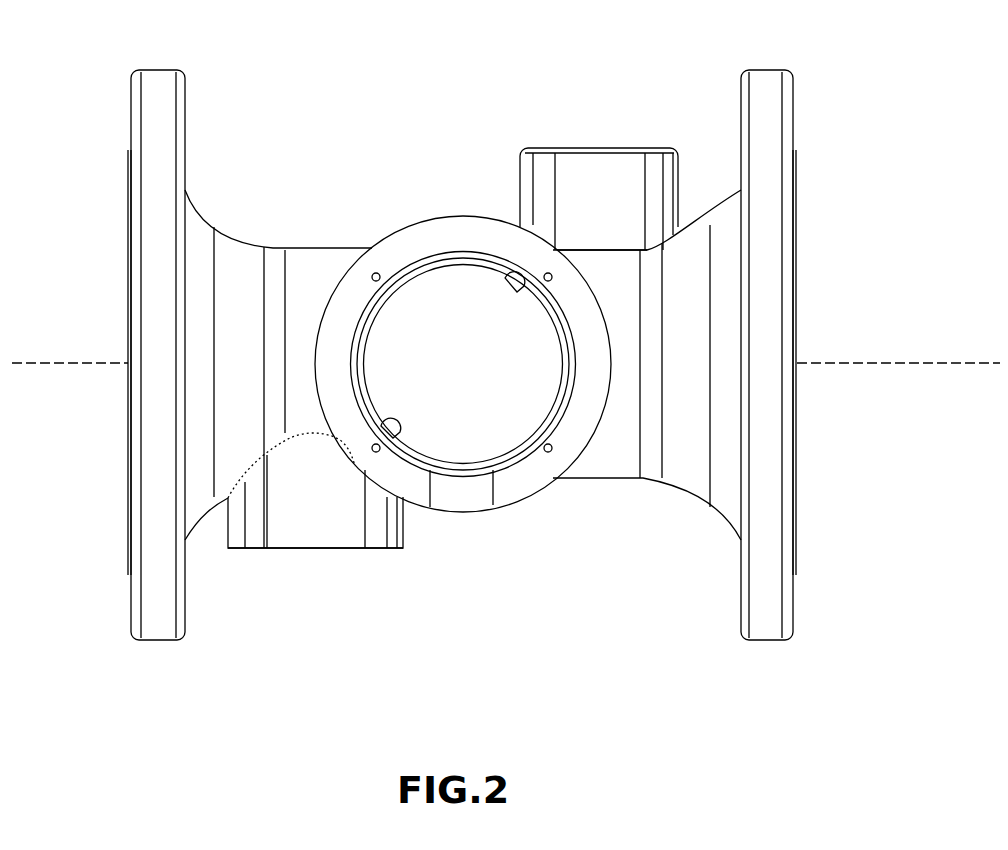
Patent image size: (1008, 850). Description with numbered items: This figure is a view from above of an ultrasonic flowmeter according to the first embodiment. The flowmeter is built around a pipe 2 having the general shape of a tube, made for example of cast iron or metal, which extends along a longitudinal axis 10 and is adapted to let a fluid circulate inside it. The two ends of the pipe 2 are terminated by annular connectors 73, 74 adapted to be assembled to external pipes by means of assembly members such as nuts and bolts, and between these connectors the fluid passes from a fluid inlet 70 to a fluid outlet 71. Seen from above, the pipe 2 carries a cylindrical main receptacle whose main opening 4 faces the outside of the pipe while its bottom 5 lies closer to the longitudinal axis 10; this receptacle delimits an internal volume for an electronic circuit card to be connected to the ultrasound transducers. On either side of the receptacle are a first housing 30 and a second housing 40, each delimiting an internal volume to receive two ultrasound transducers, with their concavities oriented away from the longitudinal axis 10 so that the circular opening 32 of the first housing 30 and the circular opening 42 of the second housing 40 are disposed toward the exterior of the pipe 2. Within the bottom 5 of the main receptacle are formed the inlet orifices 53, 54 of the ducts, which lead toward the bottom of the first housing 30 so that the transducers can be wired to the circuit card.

The pipe 2 is at (626, 482).
The main opening 4 is at (436, 300).
The bottom 5 is at (413, 336).
The longitudinal axis 10 is at (855, 362).
The first housing 30 is at (357, 517).
The opening 32 is at (300, 560).
The second housing 40 is at (658, 165).
The circular opening 42 is at (600, 130).
The inlet orifice 53 is at (512, 280).
The inlet orifice 54 is at (400, 428).
The fluid inlet 70 is at (108, 413).
The fluid outlet 71 is at (820, 414).
The annular connector 73 is at (152, 112).
The annular connector 74 is at (774, 112).